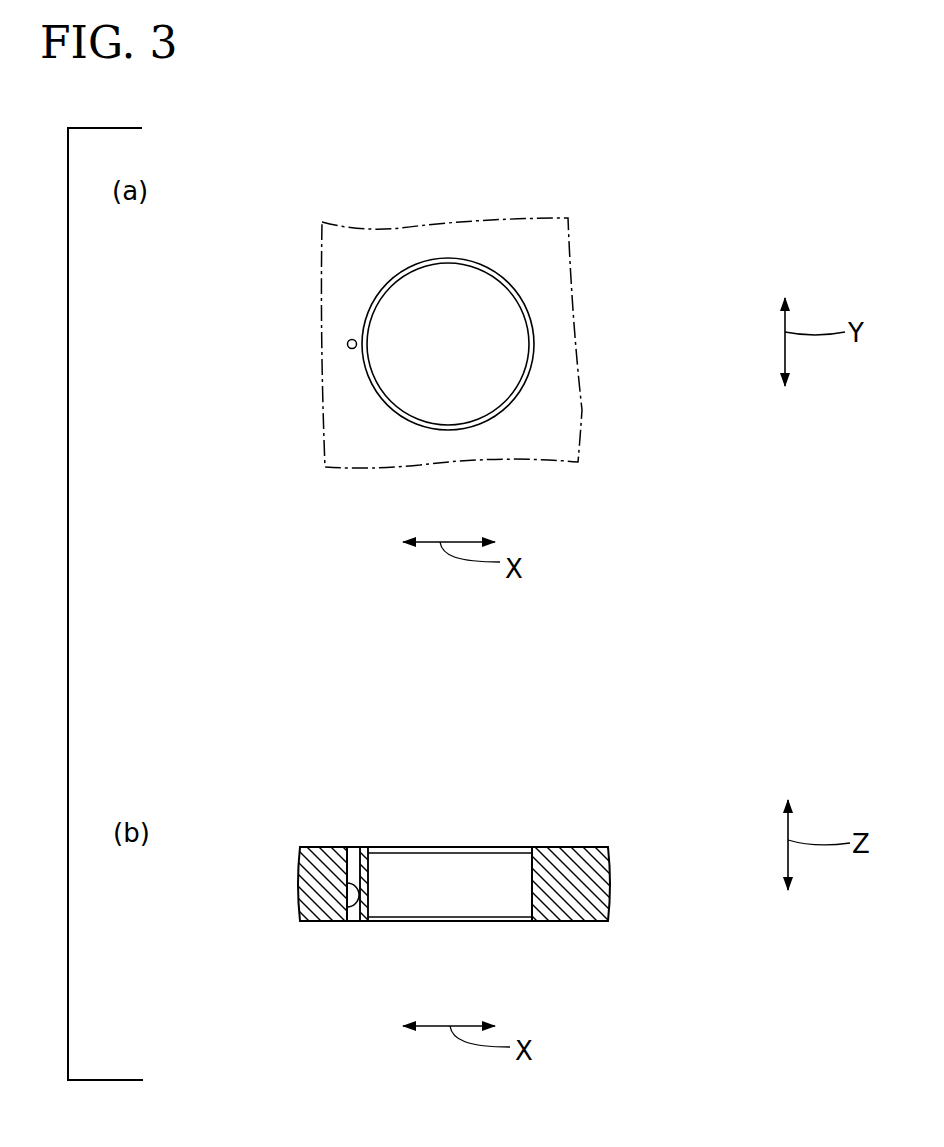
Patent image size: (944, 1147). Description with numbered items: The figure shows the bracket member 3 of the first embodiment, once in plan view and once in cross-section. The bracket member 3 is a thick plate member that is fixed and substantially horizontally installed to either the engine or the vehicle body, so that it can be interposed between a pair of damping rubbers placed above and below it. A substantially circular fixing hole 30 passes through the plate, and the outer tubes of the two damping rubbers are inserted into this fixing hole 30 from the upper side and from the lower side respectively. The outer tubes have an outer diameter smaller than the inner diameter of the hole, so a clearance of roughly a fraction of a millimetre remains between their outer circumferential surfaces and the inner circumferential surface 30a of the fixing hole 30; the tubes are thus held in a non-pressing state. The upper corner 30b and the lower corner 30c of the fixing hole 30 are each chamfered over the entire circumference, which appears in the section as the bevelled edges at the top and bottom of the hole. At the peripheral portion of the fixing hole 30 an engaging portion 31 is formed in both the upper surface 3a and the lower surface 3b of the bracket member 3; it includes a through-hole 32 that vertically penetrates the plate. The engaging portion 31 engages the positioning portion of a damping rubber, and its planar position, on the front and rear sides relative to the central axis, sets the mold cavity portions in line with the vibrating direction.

The bracket member 3 is at (602, 208).
The upper surface 3a is at (350, 427).
The lower surface 3b is at (313, 928).
The fixing hole 30 is at (463, 290).
The inner circumferential surface 30a is at (402, 289).
The upper corner 30b is at (517, 394).
The lower corner 30c is at (505, 925).
The engaging portion 31 is at (351, 362).
The through-hole 32 is at (347, 339).